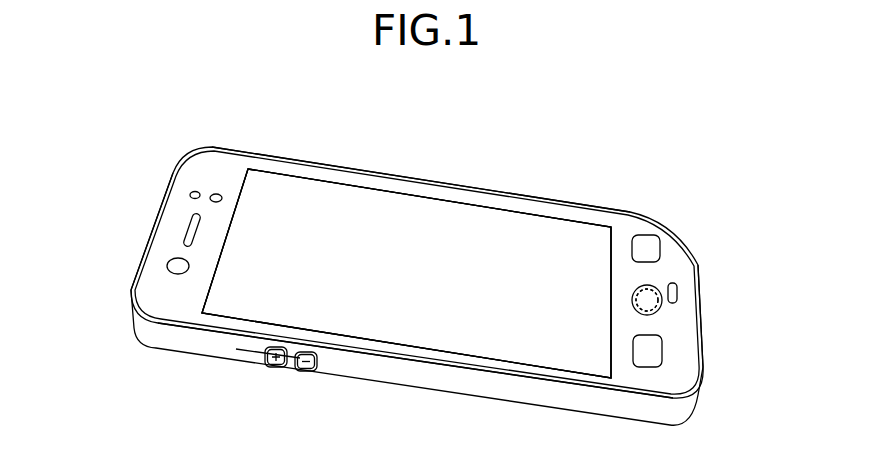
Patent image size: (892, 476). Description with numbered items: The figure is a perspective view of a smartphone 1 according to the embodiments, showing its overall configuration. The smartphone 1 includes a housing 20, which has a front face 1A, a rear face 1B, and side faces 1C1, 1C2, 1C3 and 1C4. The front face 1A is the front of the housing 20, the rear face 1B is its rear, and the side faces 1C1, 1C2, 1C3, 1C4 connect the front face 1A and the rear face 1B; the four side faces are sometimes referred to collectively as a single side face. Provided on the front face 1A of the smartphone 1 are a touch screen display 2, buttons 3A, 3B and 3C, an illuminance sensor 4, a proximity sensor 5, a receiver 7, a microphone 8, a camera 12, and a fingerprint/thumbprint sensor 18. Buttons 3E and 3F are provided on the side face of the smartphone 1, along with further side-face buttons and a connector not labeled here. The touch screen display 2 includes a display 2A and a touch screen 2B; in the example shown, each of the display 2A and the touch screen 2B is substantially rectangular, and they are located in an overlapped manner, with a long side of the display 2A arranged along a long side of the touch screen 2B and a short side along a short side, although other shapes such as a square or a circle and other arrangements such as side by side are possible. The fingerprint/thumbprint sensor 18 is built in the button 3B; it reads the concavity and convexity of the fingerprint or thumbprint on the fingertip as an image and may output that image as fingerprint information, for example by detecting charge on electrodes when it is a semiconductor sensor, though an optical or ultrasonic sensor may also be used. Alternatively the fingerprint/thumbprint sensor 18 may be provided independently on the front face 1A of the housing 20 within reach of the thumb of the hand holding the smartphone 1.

The smartphone 1 is at (470, 117).
The front face 1A is at (157, 293).
The rear face 1B is at (190, 362).
The side face 1C1 is at (173, 172).
The side face 1C2 is at (702, 342).
The side face 1C3 is at (478, 390).
The side face 1C4 is at (364, 168).
The touch screen display 2 is at (487, 222).
The display 2A is at (406, 273).
The touch screen 2B is at (406, 273).
The button 3A is at (662, 362).
The button 3B is at (649, 286).
The button 3C is at (643, 233).
The button 3E is at (281, 368).
The button 3F is at (311, 371).
The illuminance sensor 4 is at (190, 195).
The proximity sensor 5 is at (215, 194).
The receiver 7 is at (187, 225).
The microphone 8 is at (678, 288).
The camera 12 is at (167, 264).
The fingerprint/thumbprint sensor 18 is at (662, 312).
The housing 20 is at (243, 352).